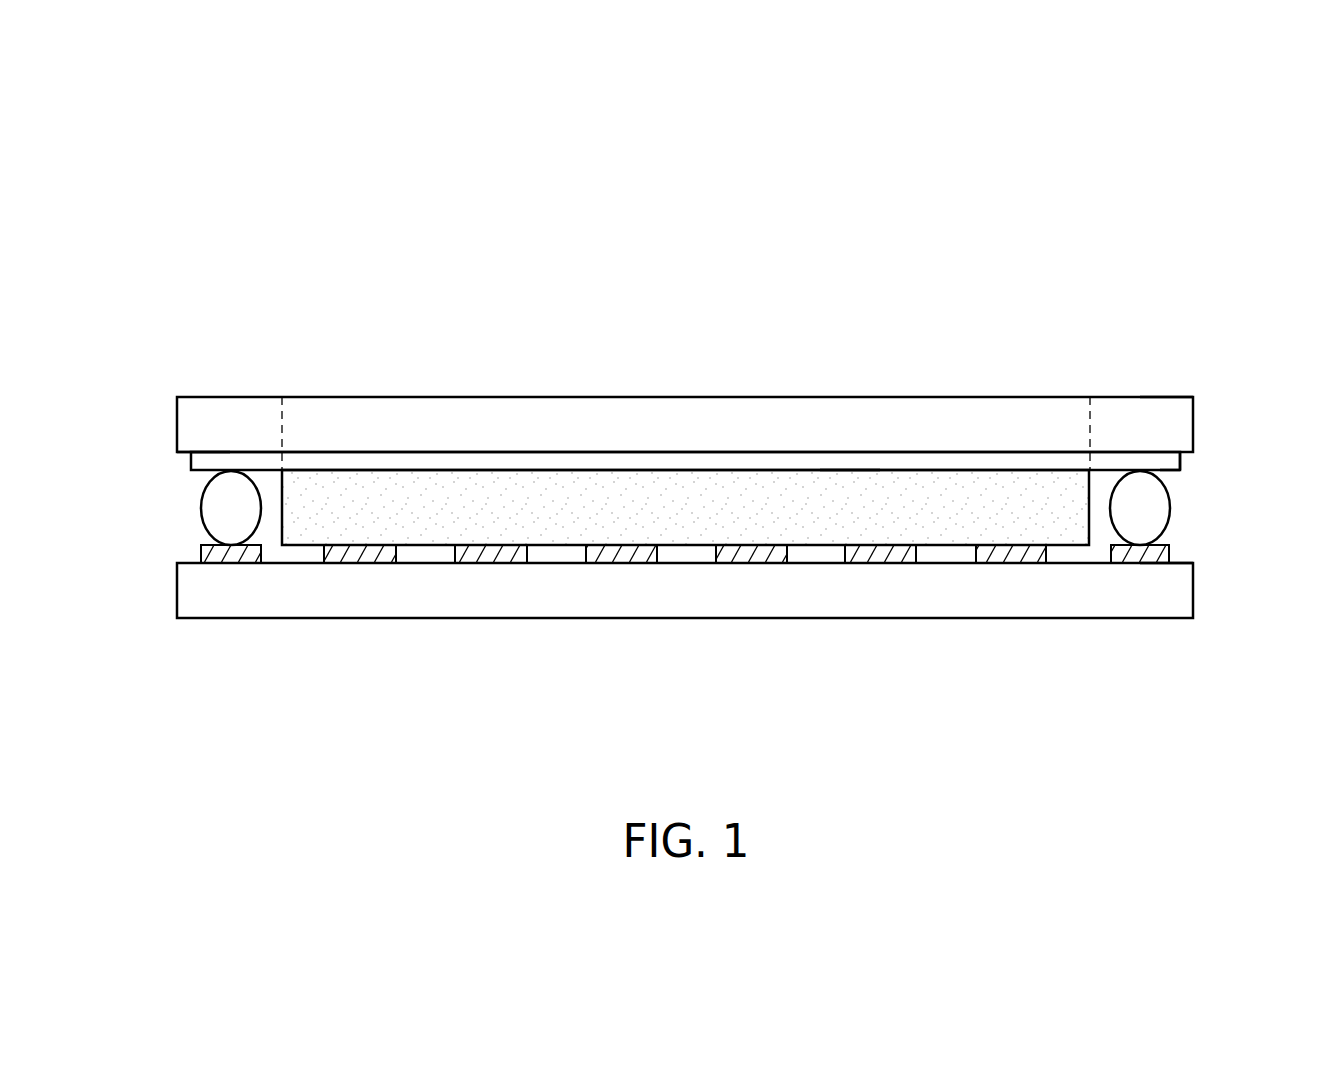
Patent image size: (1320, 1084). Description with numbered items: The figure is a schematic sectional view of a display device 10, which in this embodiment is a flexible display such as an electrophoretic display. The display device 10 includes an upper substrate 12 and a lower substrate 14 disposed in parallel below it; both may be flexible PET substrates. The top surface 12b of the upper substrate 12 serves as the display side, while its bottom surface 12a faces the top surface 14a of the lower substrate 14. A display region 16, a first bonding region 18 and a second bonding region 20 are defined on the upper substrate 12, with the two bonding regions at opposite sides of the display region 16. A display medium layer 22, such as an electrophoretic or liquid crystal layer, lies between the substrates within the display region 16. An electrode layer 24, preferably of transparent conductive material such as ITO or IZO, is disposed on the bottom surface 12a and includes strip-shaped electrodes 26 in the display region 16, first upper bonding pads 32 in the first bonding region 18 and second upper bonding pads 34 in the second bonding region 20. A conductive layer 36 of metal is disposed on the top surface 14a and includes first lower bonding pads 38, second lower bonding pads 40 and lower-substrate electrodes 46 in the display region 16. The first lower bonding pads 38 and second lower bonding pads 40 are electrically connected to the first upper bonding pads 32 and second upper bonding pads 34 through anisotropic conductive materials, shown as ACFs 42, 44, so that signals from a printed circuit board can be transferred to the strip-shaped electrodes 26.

The display device 10 is at (1205, 180).
The upper substrate 12 is at (695, 438).
The bottom surface of the upper substrate 12a is at (208, 451).
The top surface of the upper substrate 12b is at (1168, 397).
The lower substrate 14 is at (695, 603).
The top surface of the lower substrate 14a is at (1178, 563).
The display region 16 is at (1088, 342).
The first bonding region 18 is at (176, 342).
The second bonding region 20 is at (1196, 342).
The display medium layer 22 is at (695, 521).
The electrode layer 24 is at (1200, 452).
The strip-shaped electrodes 26 is at (850, 466).
The first upper bonding pads 32 is at (197, 459).
The second upper bonding pads 34 is at (1172, 468).
The conductive layer 36 is at (172, 542).
The first lower bonding pads 38 is at (200, 548).
The second lower bonding pads 40 is at (1131, 553).
The ACF 42 is at (245, 523).
The ACF 44 is at (1154, 523).
The lower-substrate electrodes 46 is at (878, 553).